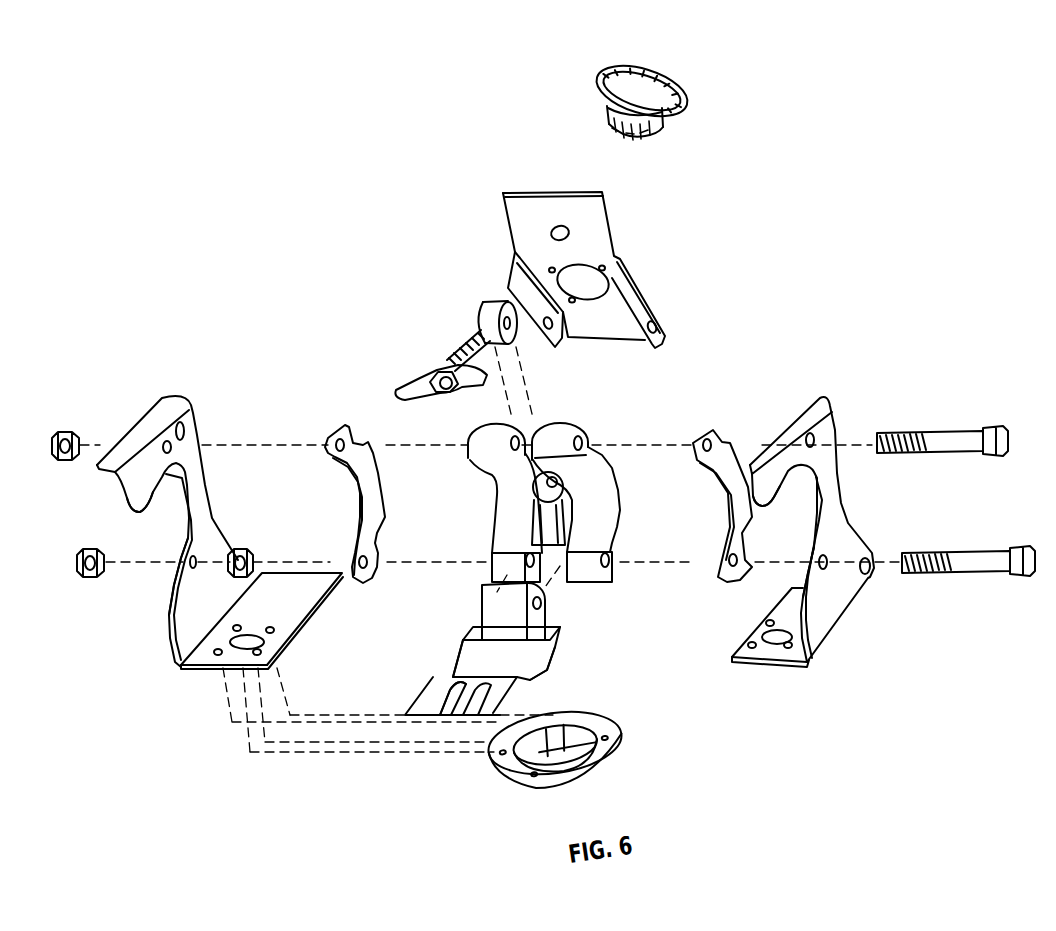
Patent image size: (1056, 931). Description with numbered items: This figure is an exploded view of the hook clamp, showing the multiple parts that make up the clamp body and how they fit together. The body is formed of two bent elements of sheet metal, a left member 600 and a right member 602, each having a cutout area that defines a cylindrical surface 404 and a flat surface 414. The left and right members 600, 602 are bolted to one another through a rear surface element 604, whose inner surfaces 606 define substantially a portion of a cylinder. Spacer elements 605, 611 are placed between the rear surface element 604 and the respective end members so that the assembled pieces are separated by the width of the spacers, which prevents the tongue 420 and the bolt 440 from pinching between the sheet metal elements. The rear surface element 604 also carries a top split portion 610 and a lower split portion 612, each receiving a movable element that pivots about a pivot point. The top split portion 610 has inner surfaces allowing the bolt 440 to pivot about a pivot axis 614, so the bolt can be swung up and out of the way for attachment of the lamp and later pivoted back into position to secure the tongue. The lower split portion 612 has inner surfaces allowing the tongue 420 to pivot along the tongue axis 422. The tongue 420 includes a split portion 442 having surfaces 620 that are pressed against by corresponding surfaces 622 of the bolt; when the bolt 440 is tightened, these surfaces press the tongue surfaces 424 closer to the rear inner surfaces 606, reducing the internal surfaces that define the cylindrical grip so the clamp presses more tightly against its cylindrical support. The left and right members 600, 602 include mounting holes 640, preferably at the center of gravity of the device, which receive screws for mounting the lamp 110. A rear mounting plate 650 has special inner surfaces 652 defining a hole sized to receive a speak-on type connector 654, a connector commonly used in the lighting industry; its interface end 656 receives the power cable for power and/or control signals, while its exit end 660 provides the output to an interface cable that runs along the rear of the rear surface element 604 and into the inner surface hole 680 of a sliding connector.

The lamp 110 is at (620, 747).
The cylindrical surface 404 is at (158, 480).
The flat surface 414 is at (174, 593).
The tongue 420 is at (470, 650).
The tongue axis 422 is at (622, 540).
The tongue surfaces 424 is at (543, 683).
The bolt 440 is at (472, 338).
The split portion 442 is at (458, 688).
The left member 600 is at (155, 408).
The right member 602 is at (812, 403).
The rear surface element 604 is at (612, 488).
The spacer element 605 is at (366, 450).
The inner surfaces 606 is at (507, 518).
The top split portion 610 is at (556, 420).
The spacer element 611 is at (733, 445).
The lower split portion 612 is at (586, 573).
The pivot axis 614 is at (583, 443).
The surfaces 620 is at (430, 707).
The surfaces 622 is at (436, 367).
The mounting holes 640 is at (220, 652).
The rear mounting plate 650 is at (641, 303).
The inner surfaces 652 is at (614, 268).
The speak-on type connector 654 is at (658, 112).
The interface end 656 is at (653, 70).
The exit end 660 is at (613, 140).
The inner surface hole 680 is at (240, 637).